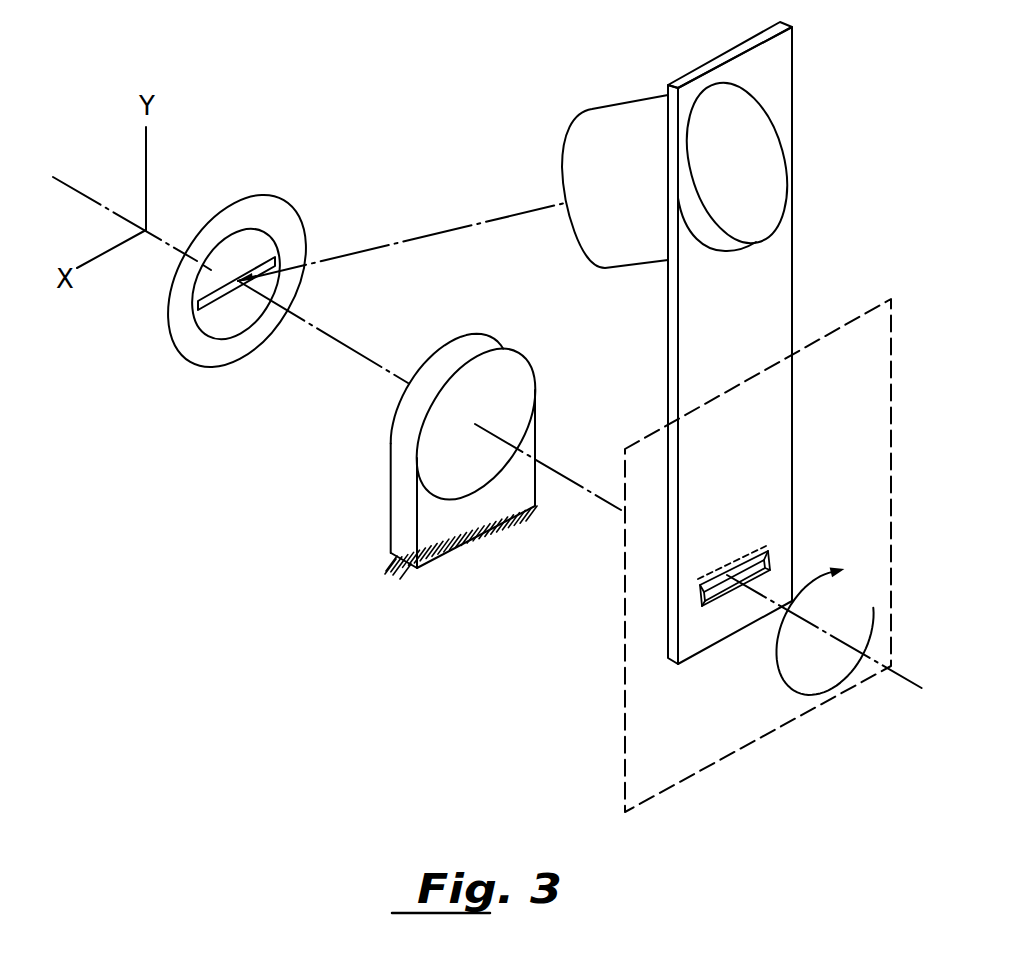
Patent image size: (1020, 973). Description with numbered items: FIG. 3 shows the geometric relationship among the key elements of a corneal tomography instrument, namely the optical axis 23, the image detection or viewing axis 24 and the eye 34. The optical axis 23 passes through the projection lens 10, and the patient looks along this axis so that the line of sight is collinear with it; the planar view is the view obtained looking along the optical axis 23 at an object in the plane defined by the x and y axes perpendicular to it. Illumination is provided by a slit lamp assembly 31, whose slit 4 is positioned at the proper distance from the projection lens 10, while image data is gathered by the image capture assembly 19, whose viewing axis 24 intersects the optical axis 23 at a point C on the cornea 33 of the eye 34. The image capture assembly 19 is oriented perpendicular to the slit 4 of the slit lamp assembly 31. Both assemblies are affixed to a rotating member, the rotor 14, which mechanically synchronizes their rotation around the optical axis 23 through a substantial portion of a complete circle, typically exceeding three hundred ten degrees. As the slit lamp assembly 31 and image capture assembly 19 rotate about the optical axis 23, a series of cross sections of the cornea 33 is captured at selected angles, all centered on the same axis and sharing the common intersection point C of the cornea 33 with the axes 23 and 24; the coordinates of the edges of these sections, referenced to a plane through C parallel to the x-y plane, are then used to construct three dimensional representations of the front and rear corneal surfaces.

The slit 4 is at (729, 584).
The projection lens 10 is at (524, 361).
The rotor 14 is at (793, 100).
The image capture assembly 19 is at (621, 100).
The optical axis 23 is at (372, 370).
The viewing axis 24 is at (412, 229).
The slit lamp assembly 31 is at (855, 310).
The cornea 33 is at (204, 340).
The eye 34 is at (253, 194).
The point C is at (239, 283).